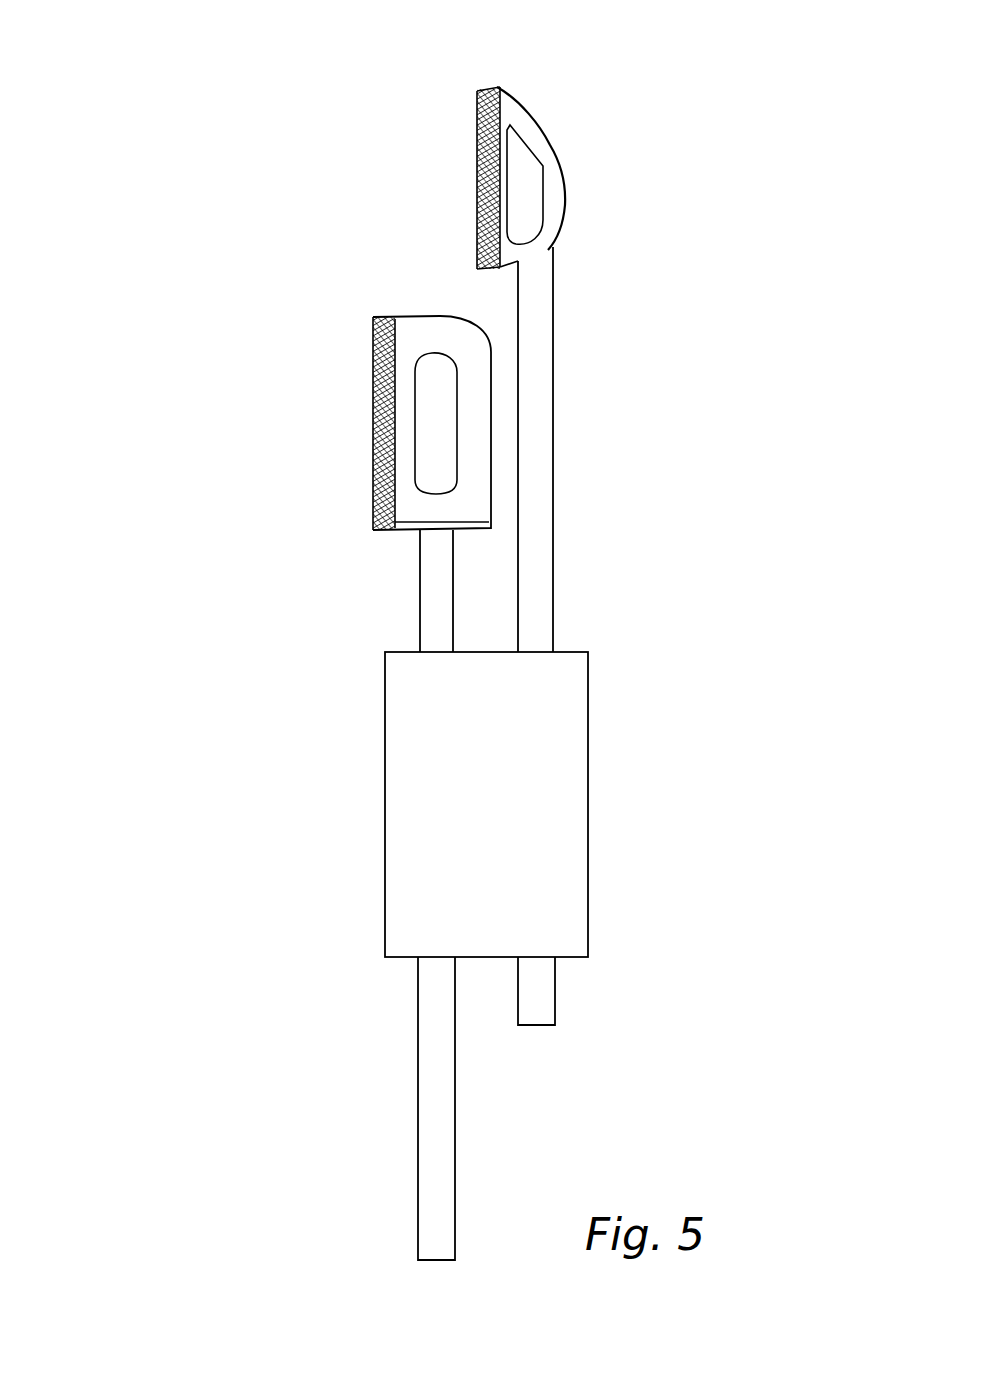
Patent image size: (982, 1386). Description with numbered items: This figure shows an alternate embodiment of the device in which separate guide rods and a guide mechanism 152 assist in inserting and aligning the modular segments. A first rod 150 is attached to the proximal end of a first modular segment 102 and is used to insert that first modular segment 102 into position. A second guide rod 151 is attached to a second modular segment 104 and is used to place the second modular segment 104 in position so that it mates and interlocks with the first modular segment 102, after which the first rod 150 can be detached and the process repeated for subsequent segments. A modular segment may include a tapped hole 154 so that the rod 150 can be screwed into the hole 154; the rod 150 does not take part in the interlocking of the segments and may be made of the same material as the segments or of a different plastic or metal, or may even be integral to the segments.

The first modular segment 102 is at (514, 78).
The second modular segment 104 is at (407, 355).
The first rod 150 is at (535, 494).
The second guide rod 151 is at (433, 1218).
The guide mechanism 152 is at (527, 800).
The tapped hole 154 is at (410, 530).